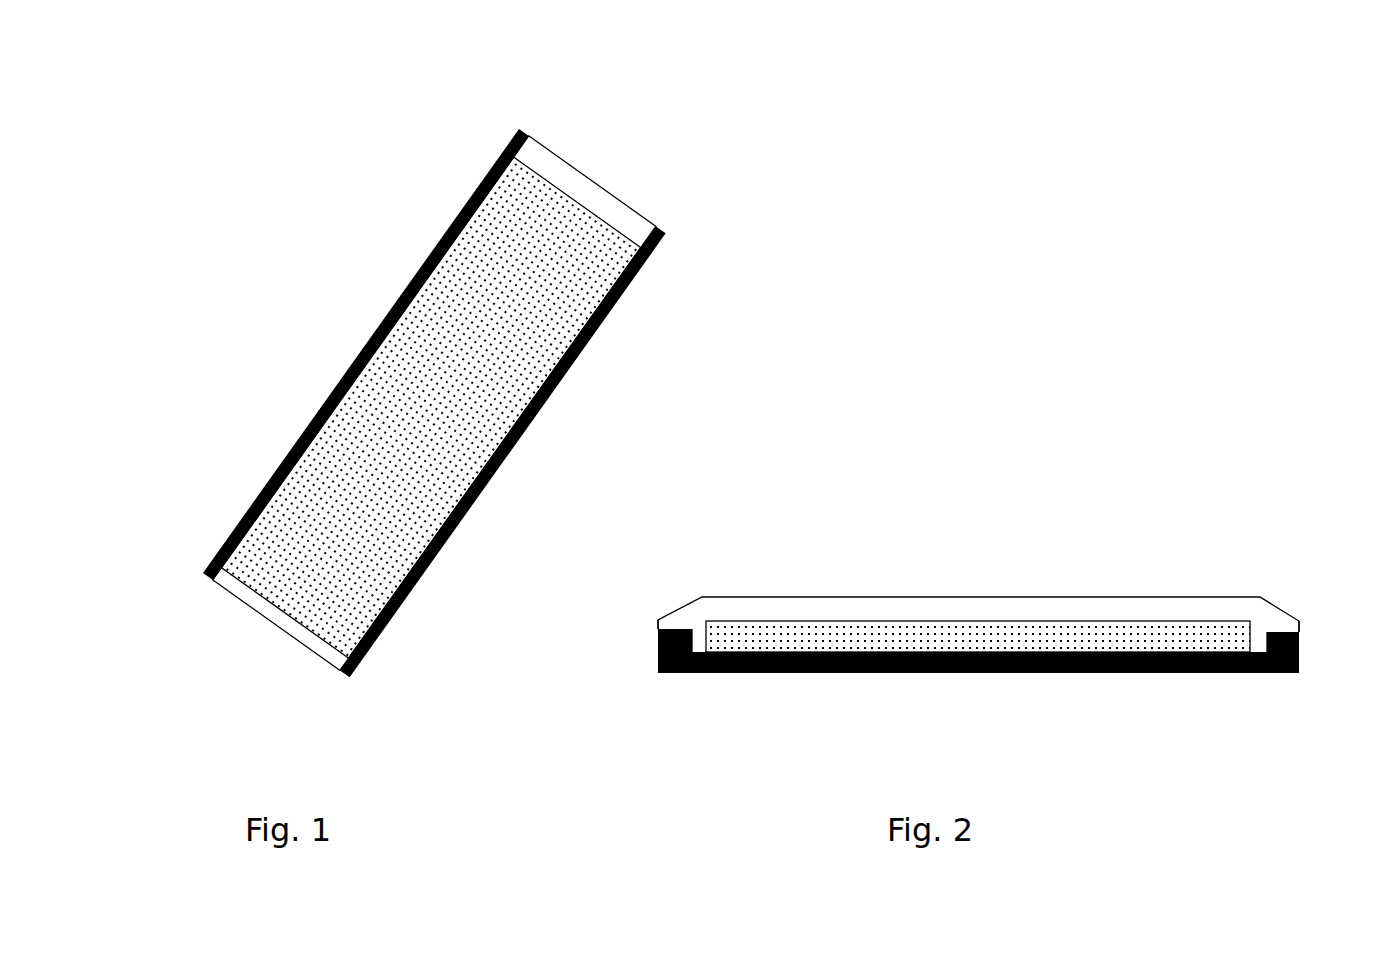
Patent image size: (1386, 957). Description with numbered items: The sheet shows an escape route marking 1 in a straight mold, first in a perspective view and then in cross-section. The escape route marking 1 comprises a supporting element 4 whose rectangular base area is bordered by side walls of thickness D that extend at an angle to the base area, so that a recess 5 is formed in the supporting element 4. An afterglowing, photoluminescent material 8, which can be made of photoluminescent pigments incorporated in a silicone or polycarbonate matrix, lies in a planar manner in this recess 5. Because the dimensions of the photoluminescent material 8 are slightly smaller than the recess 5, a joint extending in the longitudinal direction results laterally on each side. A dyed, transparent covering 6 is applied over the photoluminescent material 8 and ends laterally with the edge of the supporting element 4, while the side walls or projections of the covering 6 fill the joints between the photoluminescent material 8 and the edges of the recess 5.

In FIG. 1, the escape route marking 1 is at (338, 155).
In FIG. 2, the escape route marking 1 is at (1215, 513).
In FIG. 1, the supporting element 4 is at (255, 498).
In FIG. 2, the supporting element 4 is at (712, 677).
In FIG. 2, the recess 5 is at (698, 627).
In FIG. 1, the covering 6 is at (585, 190).
In FIG. 2, the covering 6 is at (927, 597).
In FIG. 1, the photoluminescent material 8 is at (411, 385).
In FIG. 2, the photoluminescent material 8 is at (1107, 627).
In FIG. 2, the thickness of side walls D is at (669, 626).